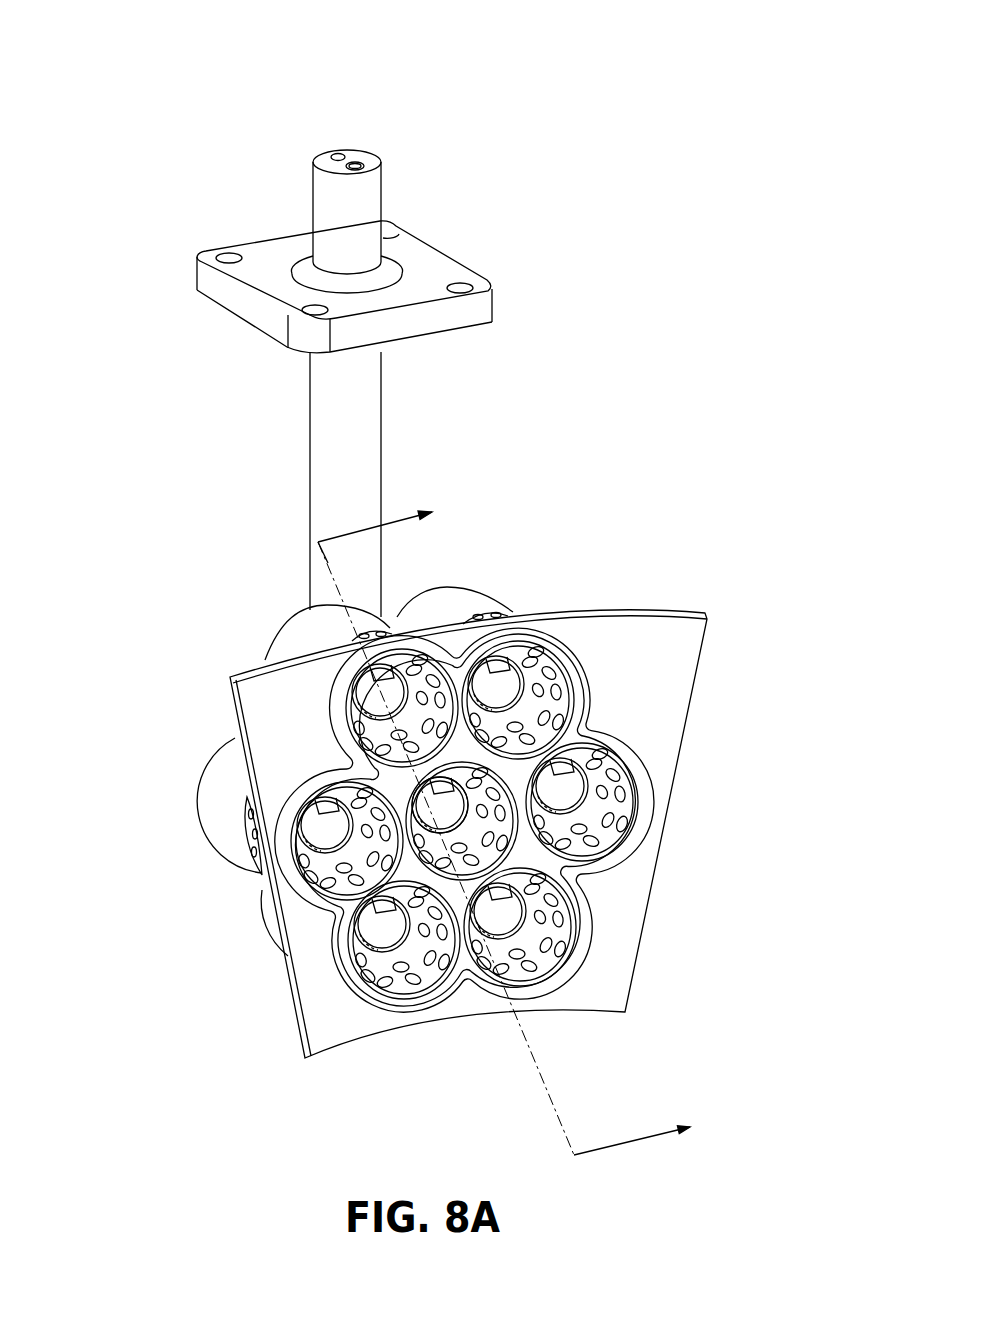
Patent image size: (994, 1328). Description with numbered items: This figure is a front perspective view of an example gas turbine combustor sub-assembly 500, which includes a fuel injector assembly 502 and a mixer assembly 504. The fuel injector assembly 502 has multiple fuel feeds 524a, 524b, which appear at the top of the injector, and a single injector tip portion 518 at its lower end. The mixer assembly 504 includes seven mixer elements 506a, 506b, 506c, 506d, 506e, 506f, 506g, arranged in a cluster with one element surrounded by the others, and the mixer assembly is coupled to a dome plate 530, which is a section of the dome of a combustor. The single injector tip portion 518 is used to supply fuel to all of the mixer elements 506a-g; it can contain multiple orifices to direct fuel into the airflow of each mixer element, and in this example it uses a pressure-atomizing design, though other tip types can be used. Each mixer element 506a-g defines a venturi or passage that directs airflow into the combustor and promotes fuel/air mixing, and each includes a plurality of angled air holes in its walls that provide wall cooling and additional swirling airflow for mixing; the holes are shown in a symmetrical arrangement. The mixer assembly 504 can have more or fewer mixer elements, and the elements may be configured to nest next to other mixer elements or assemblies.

The gas turbine combustor sub-assembly 500 is at (183, 92).
The fuel injector assembly 502 is at (270, 412).
The mixer assembly 504 is at (257, 593).
The mixer element 506a is at (510, 680).
The mixer element 506b is at (600, 810).
The mixer element 506c is at (560, 948).
The mixer element 506d is at (397, 973).
The mixer element 506e is at (320, 872).
The mixer element 506f is at (388, 700).
The mixer element 506g is at (499, 842).
The injector tip portion 518 is at (410, 797).
The fuel feed 524a is at (332, 150).
The fuel feed 524b is at (372, 153).
The dome plate 530 is at (655, 632).